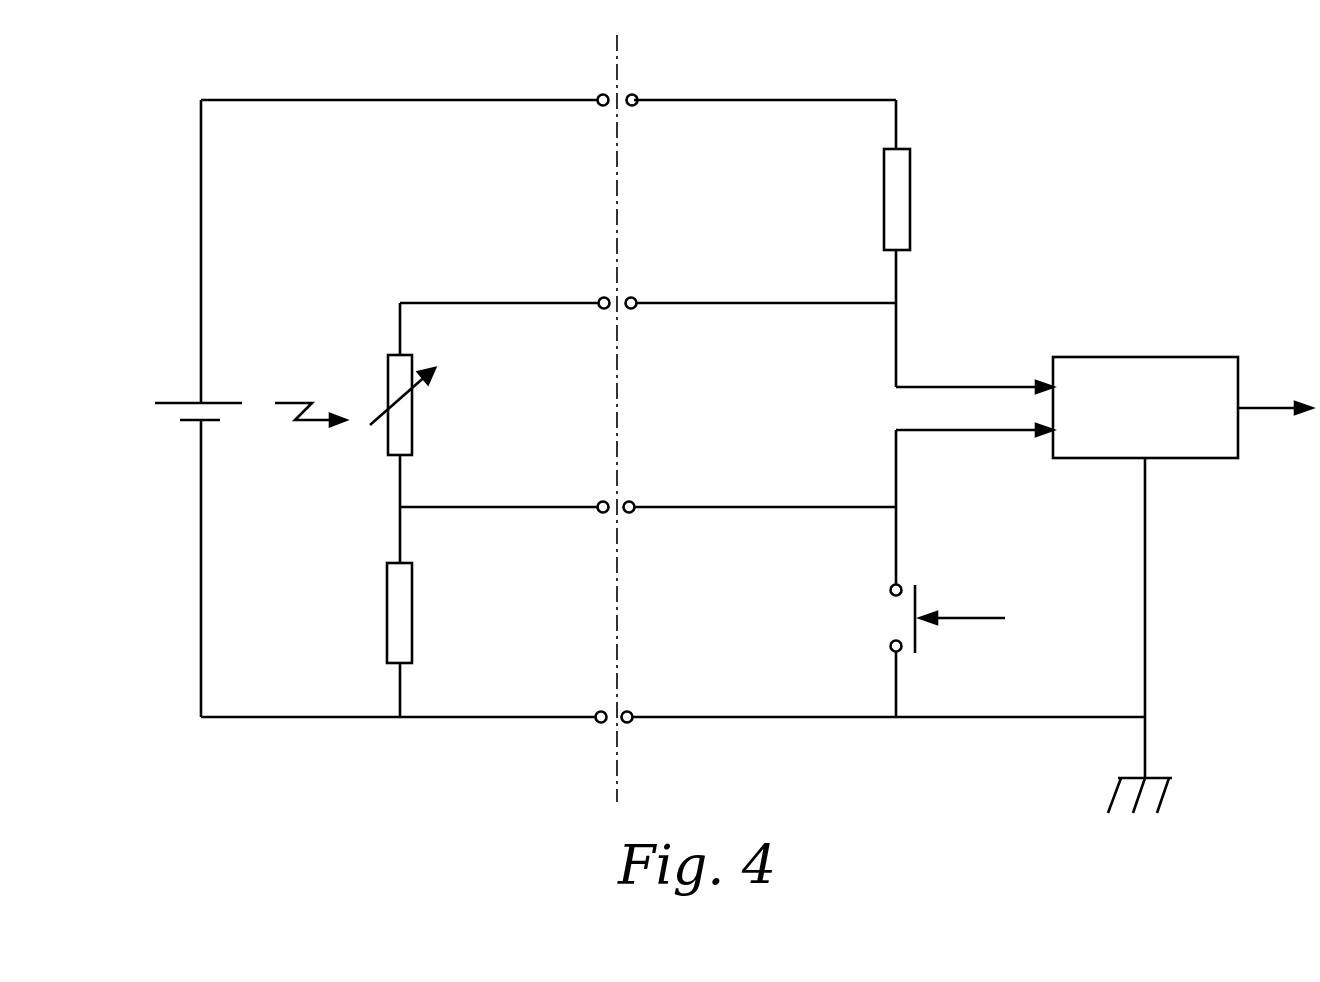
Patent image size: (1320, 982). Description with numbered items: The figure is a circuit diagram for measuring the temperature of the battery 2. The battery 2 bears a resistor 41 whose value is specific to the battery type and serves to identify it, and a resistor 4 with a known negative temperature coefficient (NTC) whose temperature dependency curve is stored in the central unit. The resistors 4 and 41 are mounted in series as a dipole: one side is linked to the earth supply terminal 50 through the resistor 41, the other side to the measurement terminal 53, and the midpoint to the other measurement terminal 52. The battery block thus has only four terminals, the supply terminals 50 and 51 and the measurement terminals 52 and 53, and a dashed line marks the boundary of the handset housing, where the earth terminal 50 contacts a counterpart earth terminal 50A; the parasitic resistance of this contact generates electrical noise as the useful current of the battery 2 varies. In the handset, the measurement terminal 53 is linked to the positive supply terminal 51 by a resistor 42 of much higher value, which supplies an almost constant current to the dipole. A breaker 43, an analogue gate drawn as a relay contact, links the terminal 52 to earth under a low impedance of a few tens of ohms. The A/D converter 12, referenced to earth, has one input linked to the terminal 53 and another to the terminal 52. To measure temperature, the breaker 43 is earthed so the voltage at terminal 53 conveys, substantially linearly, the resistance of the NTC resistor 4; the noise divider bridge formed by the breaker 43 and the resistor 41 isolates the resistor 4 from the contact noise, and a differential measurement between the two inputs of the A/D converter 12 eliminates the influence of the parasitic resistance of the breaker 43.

The battery 2 is at (190, 402).
The resistor 4 is at (388, 370).
The resistor 41 is at (387, 623).
The resistor 42 is at (910, 212).
The breaker 43 is at (918, 592).
The A/D converter 12 is at (1155, 357).
The supply terminal 51 is at (601, 93).
The measurement terminal 53 is at (600, 296).
The measurement terminal 52 is at (599, 500).
The supply terminal 50 is at (598, 710).
The counterpart earth terminal 50A is at (631, 710).